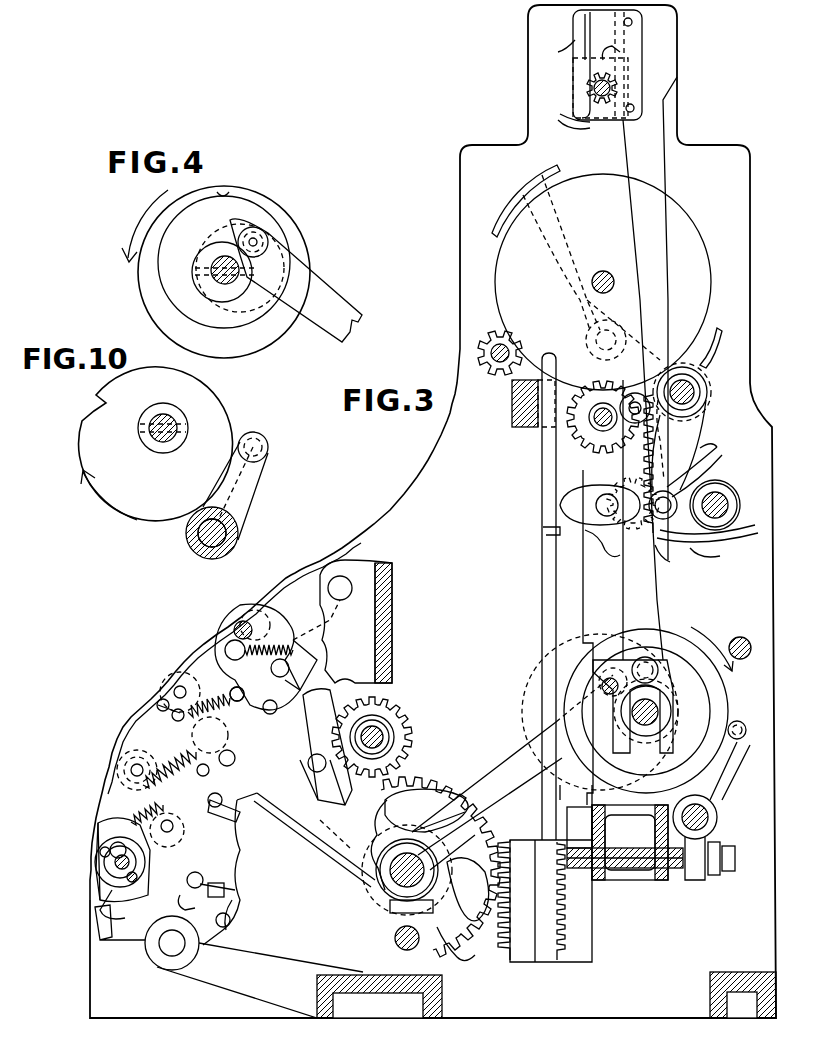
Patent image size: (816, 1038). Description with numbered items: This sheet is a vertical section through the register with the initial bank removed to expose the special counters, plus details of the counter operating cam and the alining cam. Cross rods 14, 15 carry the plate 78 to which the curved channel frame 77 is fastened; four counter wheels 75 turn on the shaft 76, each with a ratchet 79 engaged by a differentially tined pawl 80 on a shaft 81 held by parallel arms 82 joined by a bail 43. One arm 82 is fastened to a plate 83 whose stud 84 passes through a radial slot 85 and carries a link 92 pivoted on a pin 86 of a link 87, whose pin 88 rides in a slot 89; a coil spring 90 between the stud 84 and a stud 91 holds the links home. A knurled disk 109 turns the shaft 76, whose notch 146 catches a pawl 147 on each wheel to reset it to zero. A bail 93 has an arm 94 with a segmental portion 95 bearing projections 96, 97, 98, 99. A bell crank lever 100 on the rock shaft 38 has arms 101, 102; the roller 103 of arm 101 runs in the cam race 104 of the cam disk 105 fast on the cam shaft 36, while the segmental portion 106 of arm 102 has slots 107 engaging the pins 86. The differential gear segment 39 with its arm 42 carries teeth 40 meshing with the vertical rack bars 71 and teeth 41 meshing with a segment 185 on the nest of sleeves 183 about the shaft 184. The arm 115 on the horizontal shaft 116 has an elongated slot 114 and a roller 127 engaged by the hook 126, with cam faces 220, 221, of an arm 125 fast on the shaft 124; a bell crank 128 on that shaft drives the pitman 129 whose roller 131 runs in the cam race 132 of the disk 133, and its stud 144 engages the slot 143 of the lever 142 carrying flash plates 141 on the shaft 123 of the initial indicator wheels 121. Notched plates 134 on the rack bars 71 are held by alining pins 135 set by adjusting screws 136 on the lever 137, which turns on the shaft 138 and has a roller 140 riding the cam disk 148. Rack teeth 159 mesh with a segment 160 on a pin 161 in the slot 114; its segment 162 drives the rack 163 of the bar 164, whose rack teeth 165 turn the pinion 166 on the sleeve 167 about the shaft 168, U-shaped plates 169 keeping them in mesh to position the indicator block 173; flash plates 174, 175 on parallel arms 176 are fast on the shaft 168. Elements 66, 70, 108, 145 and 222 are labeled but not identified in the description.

In FIG. 3, the cross rod 14 is at (352, 585).
In FIG. 3, the cross rod 15 is at (185, 943).
In FIG. 4, the cam shaft 36 is at (240, 285).
In FIG. 10, the cam shaft 36 is at (178, 438).
In FIG. 3, the cam shaft 36 is at (650, 725).
In FIG. 3, the rock shaft 38 is at (380, 878).
In FIG. 3, the differential gear segment 39 is at (411, 947).
In FIG. 3, the teeth 40 is at (464, 948).
In FIG. 3, the teeth 41 is at (440, 784).
In FIG. 3, the radially extending arm 42 is at (312, 745).
In FIG. 3, the bail 43 is at (195, 884).
In FIG. 3, the stop pin 66 is at (736, 637).
In FIG. 3, the cam plate 70 is at (382, 808).
In FIG. 3, the vertical rack bar 71 is at (536, 970).
In FIG. 3, the counter wheel 75 is at (200, 668).
In FIG. 3, the shaft 76 is at (238, 630).
In FIG. 3, the curved channel frame 77 is at (179, 903).
In FIG. 3, the plate 78 is at (228, 920).
In FIG. 3, the ratchet 79 is at (105, 852).
In FIG. 3, the differentially tined pawl 80 is at (128, 882).
In FIG. 3, the shaft 81 is at (105, 915).
In FIG. 3, the parallel arms 82 is at (112, 880).
In FIG. 3, the plate 83 is at (218, 642).
In FIG. 3, the stud 84 is at (228, 645).
In FIG. 3, the radial slot 85 is at (124, 770).
In FIG. 3, the pin 86 is at (214, 791).
In FIG. 3, the link 87 is at (226, 809).
In FIG. 3, the pin 88 is at (278, 707).
In FIG. 3, the slot 89 is at (225, 888).
In FIG. 3, the coil spring 90 is at (285, 630).
In FIG. 3, the stud 91 is at (158, 705).
In FIG. 3, the link 92 is at (157, 822).
In FIG. 3, the bail 93 is at (390, 910).
In FIG. 3, the arm 94 is at (340, 850).
In FIG. 3, the segmental portion 95 is at (316, 769).
In FIG. 3, the projection 96 is at (244, 705).
In FIG. 3, the projection 97 is at (255, 720).
In FIG. 3, the projection 98 is at (180, 769).
In FIG. 3, the projection 99 is at (262, 796).
In FIG. 3, the bell crank lever 100 is at (378, 895).
In FIG. 4, the arm 101 is at (350, 290).
In FIG. 3, the arm 101 is at (535, 745).
In FIG. 3, the arm 102 is at (290, 825).
In FIG. 4, the antifriction roller 103 is at (262, 232).
In FIG. 3, the antifriction roller 103 is at (612, 668).
In FIG. 4, the cam race 104 is at (226, 193).
In FIG. 4, the cam disk 105 is at (282, 340).
In FIG. 3, the segmental portion 106 is at (237, 850).
In FIG. 3, the slots 107 is at (300, 650).
In FIG. 3, the bracket 108 is at (100, 820).
In FIG. 3, the knurled disk 109 is at (225, 605).
In FIG. 3, the elongated slot 114 is at (582, 503).
In FIG. 3, the arm 115 is at (690, 478).
In FIG. 3, the horizontal shaft 116 is at (722, 500).
In FIG. 3, the clerks' initial indicator wheel 121 is at (712, 283).
In FIG. 3, the shaft 123 is at (592, 280).
In FIG. 3, the shaft 124 is at (708, 388).
In FIG. 3, the arm 125 is at (700, 420).
In FIG. 3, the hook 126 is at (700, 555).
In FIG. 3, the anti-friction roller 127 is at (660, 548).
In FIG. 3, the bell crank 128 is at (688, 430).
In FIG. 3, the pitman 129 is at (655, 587).
In FIG. 3, the anti-friction roller 131 is at (650, 660).
In FIG. 3, the cam race 132 is at (700, 700).
In FIG. 3, the disk 133 is at (747, 719).
In FIG. 3, the notched plate 134 is at (565, 940).
In FIG. 3, the alining pin 135 is at (645, 870).
In FIG. 3, the adjusting screw 136 is at (733, 868).
In FIG. 10, the lever 137 is at (257, 478).
In FIG. 3, the lever 137 is at (697, 882).
In FIG. 10, the shaft 138 is at (235, 538).
In FIG. 3, the shaft 138 is at (710, 822).
In FIG. 10, the anti-friction roller 140 is at (268, 448).
In FIG. 3, the anti-friction roller 140 is at (742, 742).
In FIG. 3, the flash plate 141 is at (498, 213).
In FIG. 3, the lever 142 is at (545, 176).
In FIG. 3, the slot 143 is at (597, 328).
In FIG. 3, the stud 144 is at (608, 352).
In FIG. 3, the link 145 is at (306, 620).
In FIG. 3, the notch 146 is at (65, 875).
In FIG. 3, the pawl 147 is at (250, 620).
In FIG. 10, the cam disk 148 is at (219, 402).
In FIG. 3, the cam disk 148 is at (627, 710).
In FIG. 3, the rack teeth 159 is at (548, 532).
In FIG. 3, the segment 160 is at (619, 524).
In FIG. 3, the pin 161 is at (596, 508).
In FIG. 3, the segment 162 is at (555, 478).
In FIG. 3, the rack 163 is at (640, 445).
In FIG. 3, the bar 164 is at (668, 122).
In FIG. 3, the rack teeth 165 is at (642, 18).
In FIG. 3, the pinion 166 is at (626, 66).
In FIG. 3, the sleeve 167 is at (628, 84).
In FIG. 3, the shaft 168 is at (592, 88).
In FIG. 3, the U-shaped plates 169 is at (585, 20).
In FIG. 3, the indicator block 173 is at (620, 50).
In FIG. 3, the flash plate 174 is at (560, 50).
In FIG. 3, the flash plate 175 is at (560, 122).
In FIG. 3, the parallel arms 176 is at (562, 114).
In FIG. 3, the nest of sleeves 183 is at (394, 725).
In FIG. 3, the shaft 184 is at (390, 735).
In FIG. 3, the segment 185 is at (398, 710).
In FIG. 3, the cam face 220 is at (716, 458).
In FIG. 3, the cam face 221 is at (737, 527).
In FIG. 3, the pawl tip 222 is at (704, 450).